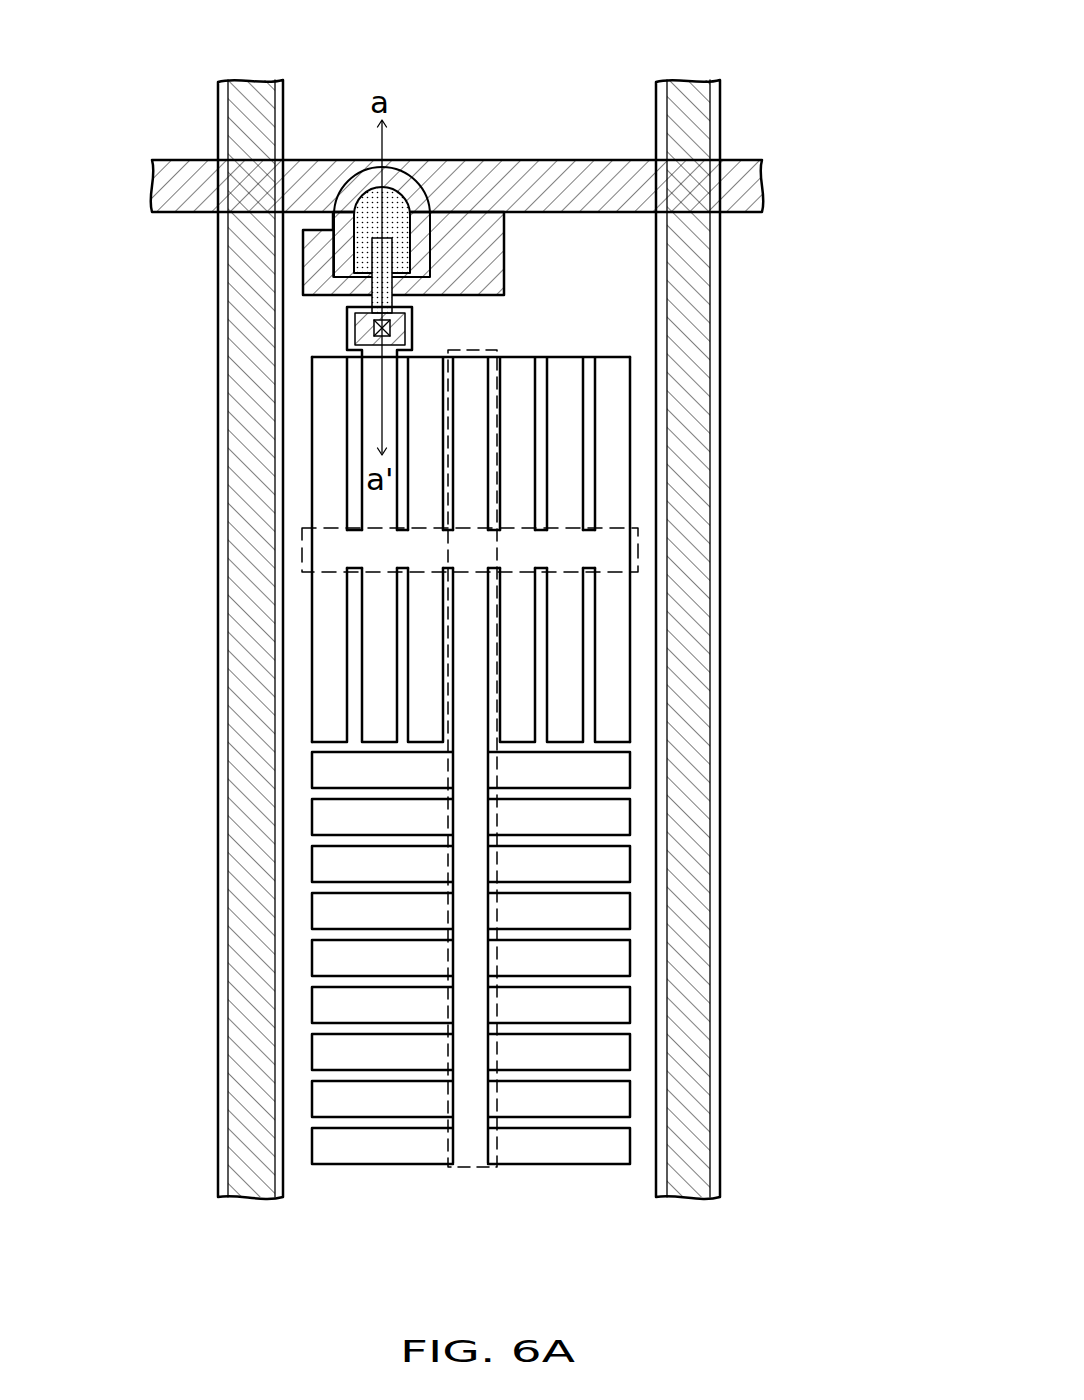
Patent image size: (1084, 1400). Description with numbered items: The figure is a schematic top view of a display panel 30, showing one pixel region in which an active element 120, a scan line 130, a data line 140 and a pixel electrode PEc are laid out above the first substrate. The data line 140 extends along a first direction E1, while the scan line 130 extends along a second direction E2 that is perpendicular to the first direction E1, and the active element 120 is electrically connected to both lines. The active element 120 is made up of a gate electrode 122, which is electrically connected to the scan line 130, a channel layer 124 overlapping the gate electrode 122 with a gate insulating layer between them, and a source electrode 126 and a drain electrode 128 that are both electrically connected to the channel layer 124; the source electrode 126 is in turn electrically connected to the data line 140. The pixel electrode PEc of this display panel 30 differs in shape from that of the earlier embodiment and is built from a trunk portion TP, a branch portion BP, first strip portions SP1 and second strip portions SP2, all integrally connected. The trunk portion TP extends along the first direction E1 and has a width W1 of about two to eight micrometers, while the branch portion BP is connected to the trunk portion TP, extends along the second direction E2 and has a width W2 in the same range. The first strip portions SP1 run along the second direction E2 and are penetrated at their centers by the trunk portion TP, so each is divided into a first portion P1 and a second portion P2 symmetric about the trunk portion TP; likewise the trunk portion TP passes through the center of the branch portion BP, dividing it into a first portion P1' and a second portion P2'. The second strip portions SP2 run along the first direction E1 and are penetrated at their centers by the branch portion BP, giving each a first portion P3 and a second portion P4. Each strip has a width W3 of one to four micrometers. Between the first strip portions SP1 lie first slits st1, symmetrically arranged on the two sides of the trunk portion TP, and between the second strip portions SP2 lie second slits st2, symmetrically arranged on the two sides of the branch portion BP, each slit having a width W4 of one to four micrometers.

The display panel 30 is at (150, 128).
The data line 140 is at (244, 93).
The scan line 130 is at (512, 163).
The active element 120 is at (138, 252).
The gate electrode 122 is at (315, 245).
The channel layer 124 is at (362, 255).
The source electrode 126 is at (417, 265).
The drain electrode 128 is at (375, 288).
The trunk portion TP is at (497, 866).
The branch portion BP is at (790, 582).
The first strip portions SP1 is at (565, 1232).
The second strip portions SP2 is at (148, 637).
The first portion P1 is at (382, 901).
The second portion P2 is at (559, 901).
The first portion P3 is at (383, 505).
The second portion P4 is at (380, 710).
The first portion P1' is at (598, 621).
The second portion P2' is at (692, 602).
The first slits st1 is at (634, 938).
The second slits st2 is at (540, 358).
The width of the trunk portion W1 is at (488, 1075).
The width of the branch portion W2 is at (540, 530).
The width of the strip portions W3 is at (443, 445).
The width of the slits W4 is at (632, 1070).
The pixel electrode PEc is at (868, 1193).
The first direction E1 is at (790, 88).
The second direction E2 is at (800, 97).